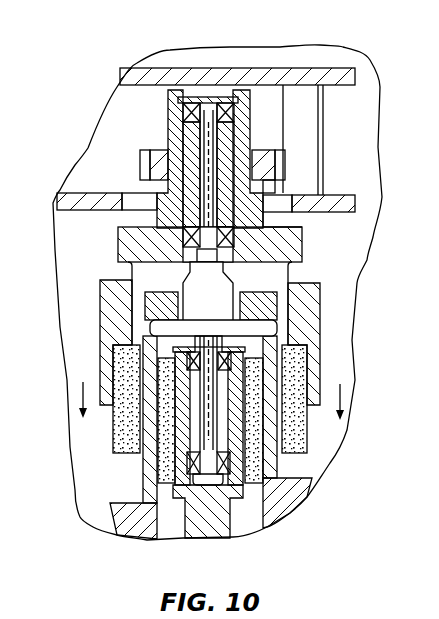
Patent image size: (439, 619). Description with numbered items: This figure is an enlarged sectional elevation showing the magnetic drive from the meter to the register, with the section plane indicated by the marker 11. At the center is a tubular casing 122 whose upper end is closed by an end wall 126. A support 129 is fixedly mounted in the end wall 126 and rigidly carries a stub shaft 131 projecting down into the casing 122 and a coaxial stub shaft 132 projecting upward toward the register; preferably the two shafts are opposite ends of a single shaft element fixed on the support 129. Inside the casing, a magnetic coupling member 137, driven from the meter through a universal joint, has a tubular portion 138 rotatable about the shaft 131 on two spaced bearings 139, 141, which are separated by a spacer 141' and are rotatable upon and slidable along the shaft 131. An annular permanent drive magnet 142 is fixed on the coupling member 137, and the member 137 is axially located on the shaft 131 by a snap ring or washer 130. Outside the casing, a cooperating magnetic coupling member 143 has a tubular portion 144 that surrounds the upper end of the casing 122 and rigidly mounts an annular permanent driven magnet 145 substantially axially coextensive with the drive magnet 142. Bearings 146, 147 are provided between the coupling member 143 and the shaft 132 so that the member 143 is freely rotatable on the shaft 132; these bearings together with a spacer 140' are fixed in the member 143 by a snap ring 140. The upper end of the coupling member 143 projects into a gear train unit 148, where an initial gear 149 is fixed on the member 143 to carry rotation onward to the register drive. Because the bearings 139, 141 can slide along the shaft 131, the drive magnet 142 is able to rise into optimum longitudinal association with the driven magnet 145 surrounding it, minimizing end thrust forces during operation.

The gear train unit 148 is at (259, 57).
The bearing 146 is at (183, 114).
The snap ring 140 is at (208, 65).
The tubular portion 144 is at (234, 130).
The stub shaft 132 is at (207, 134).
The spacer 140' is at (137, 170).
The initial gear 149 is at (273, 166).
The bearing 147 is at (302, 230).
The magnetic coupling member 143 is at (288, 254).
The end wall 126 is at (310, 303).
The tubular casing 122 is at (150, 338).
The support 129 is at (196, 290).
The snap ring 130 is at (215, 352).
The bearing 139 is at (240, 350).
The spacer 141' is at (294, 415).
The annular permanent driven magnet 145 is at (140, 432).
The tubular portion 138 is at (250, 433).
The stub shaft 131 is at (207, 413).
The bearing 141 is at (267, 468).
The annular permanent drive magnet 142 is at (160, 476).
The magnetic coupling member 137 is at (222, 518).
The section line 11 is at (214, 391).